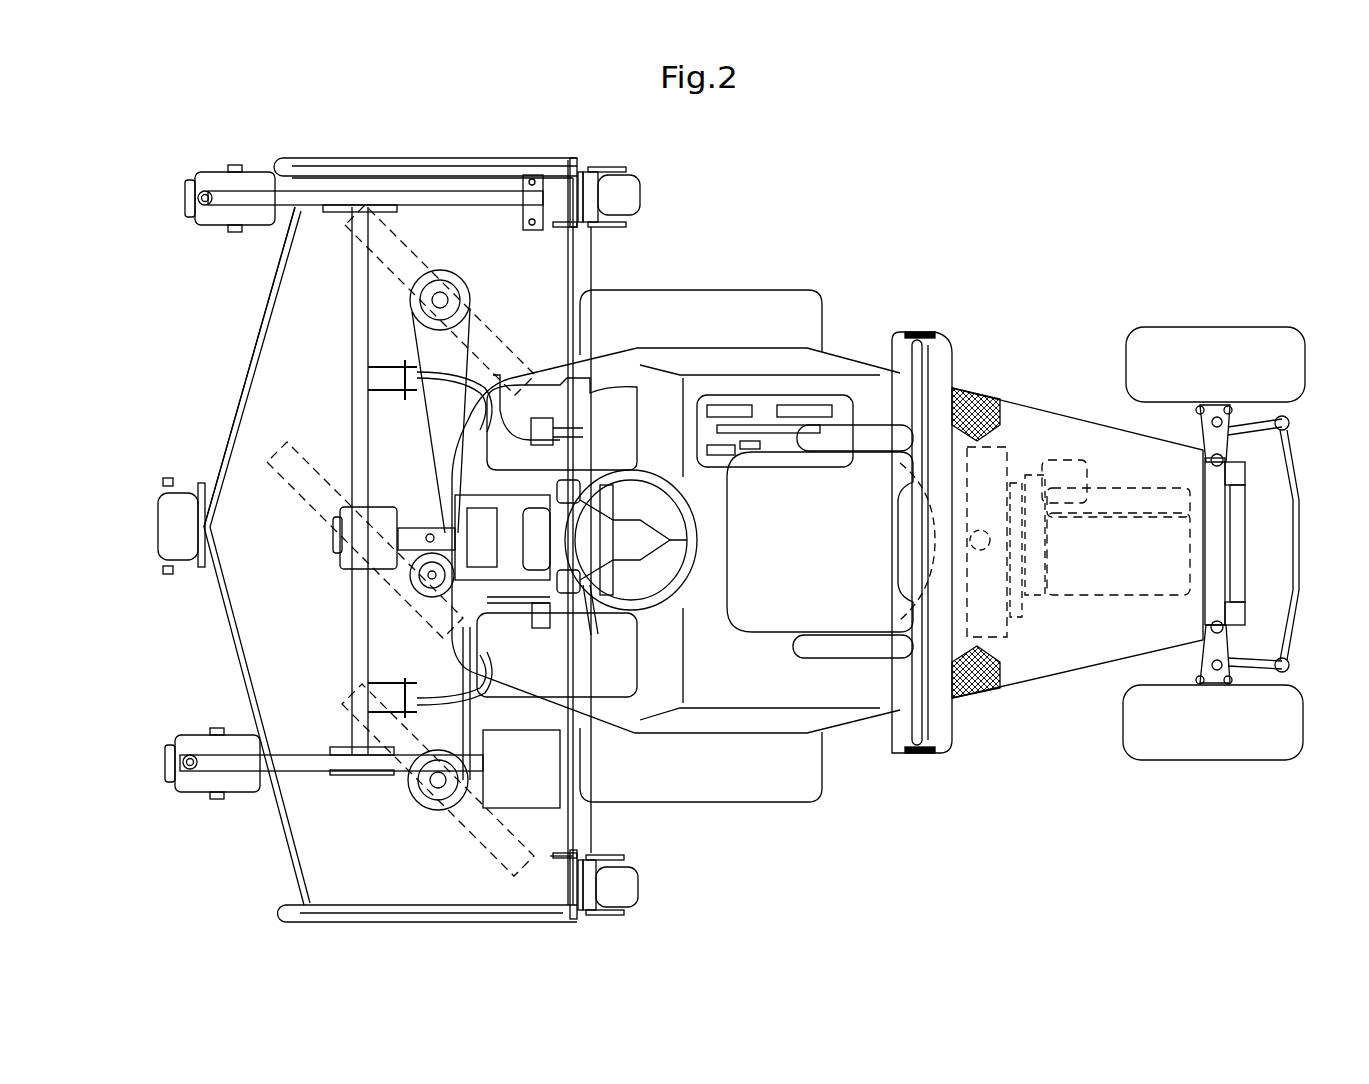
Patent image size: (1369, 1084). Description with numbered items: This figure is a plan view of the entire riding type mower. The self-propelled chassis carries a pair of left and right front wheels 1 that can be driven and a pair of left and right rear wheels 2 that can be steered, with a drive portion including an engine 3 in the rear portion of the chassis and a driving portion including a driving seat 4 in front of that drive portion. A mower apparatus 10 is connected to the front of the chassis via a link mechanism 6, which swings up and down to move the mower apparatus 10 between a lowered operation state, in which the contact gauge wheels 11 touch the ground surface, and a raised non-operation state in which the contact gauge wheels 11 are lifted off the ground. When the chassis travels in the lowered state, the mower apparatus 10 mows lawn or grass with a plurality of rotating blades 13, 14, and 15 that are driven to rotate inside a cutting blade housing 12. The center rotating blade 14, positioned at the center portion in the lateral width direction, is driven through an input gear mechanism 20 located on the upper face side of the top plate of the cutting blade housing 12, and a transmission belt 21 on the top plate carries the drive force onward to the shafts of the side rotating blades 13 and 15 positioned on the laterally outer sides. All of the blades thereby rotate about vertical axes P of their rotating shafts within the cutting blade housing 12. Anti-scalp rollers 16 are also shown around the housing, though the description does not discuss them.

The front wheels 1 is at (705, 295).
The rear wheels 2 is at (1210, 330).
The engine 3 is at (1115, 585).
The driving seat 4 is at (775, 625).
The link mechanism 6 is at (482, 698).
The mower apparatus 10 is at (224, 610).
The contact gauge wheels 11 is at (183, 186).
The cutting blade housing 12 is at (255, 383).
The side rotating blade 13 is at (468, 838).
The center rotating blade 14 is at (297, 503).
The side rotating blade 15 is at (403, 246).
The anti-scalp roller 16 is at (636, 192).
The input gear mechanism 20 is at (345, 557).
The transmission belt 21 is at (425, 468).
The axes P is at (450, 298).